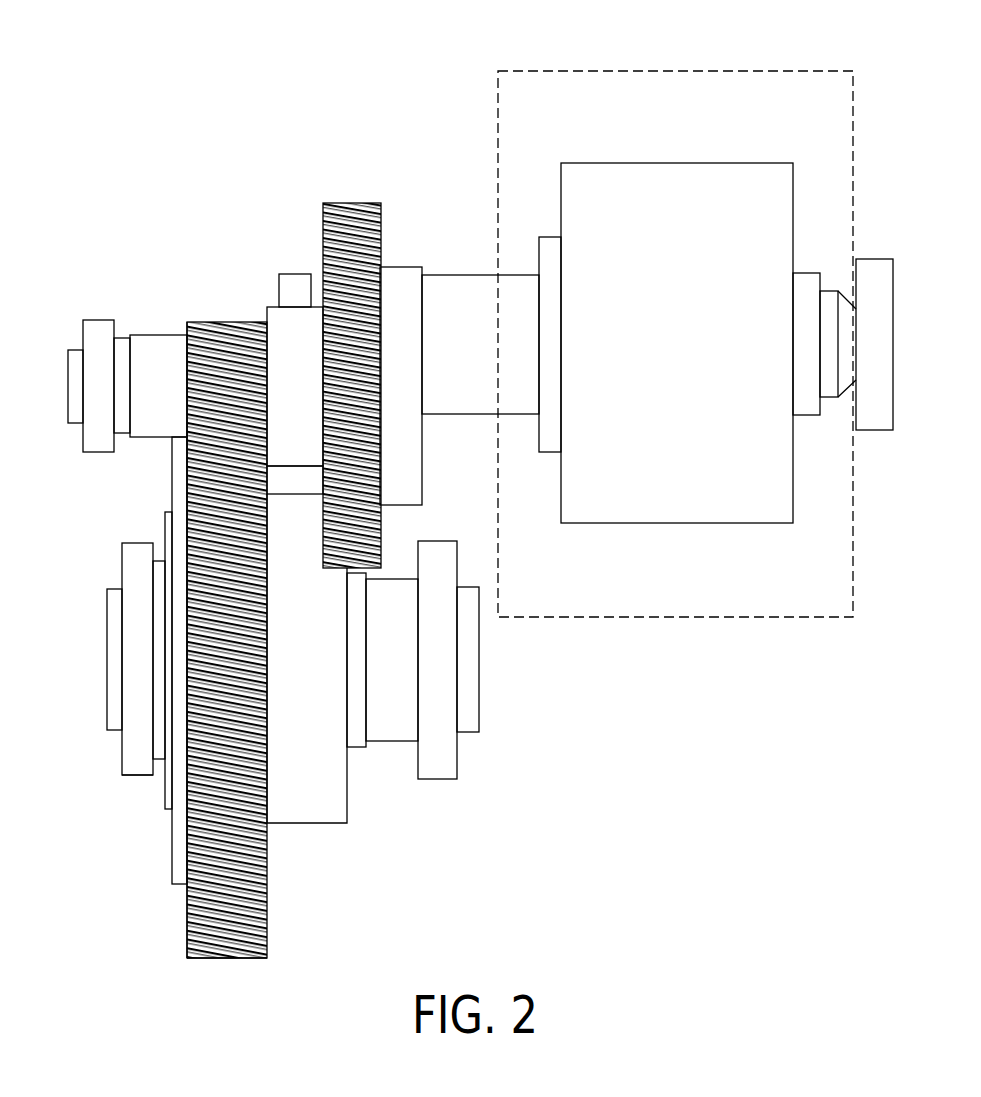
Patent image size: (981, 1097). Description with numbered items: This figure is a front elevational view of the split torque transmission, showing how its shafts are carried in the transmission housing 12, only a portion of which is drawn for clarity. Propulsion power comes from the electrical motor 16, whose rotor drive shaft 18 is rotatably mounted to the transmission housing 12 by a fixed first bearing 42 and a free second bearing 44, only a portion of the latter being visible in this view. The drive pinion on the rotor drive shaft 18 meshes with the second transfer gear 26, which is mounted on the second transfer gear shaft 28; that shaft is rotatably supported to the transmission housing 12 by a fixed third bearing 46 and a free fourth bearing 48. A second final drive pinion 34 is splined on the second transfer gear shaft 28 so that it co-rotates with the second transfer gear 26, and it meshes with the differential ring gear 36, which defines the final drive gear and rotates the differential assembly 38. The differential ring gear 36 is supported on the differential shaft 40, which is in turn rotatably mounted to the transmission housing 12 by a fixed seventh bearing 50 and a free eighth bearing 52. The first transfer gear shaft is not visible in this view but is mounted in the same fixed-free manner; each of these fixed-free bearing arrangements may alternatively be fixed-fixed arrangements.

The transmission housing 12 is at (675, 71).
The electrical motor 16 is at (795, 193).
The rotor drive shaft 18 is at (481, 275).
The second transfer gear 26 is at (352, 203).
The second transfer gear shaft 28 is at (75, 395).
The second final drive pinion 34 is at (235, 322).
The differential ring gear 36 is at (230, 958).
The differential assembly 38 is at (305, 823).
The differential shaft 40 is at (115, 653).
The fixed first bearing 42 is at (876, 259).
The free second bearing 44 is at (295, 274).
The fixed third bearing 46 is at (401, 267).
The free fourth bearing 48 is at (100, 320).
The fixed seventh bearing 50 is at (437, 779).
The free eighth bearing 52 is at (137, 775).